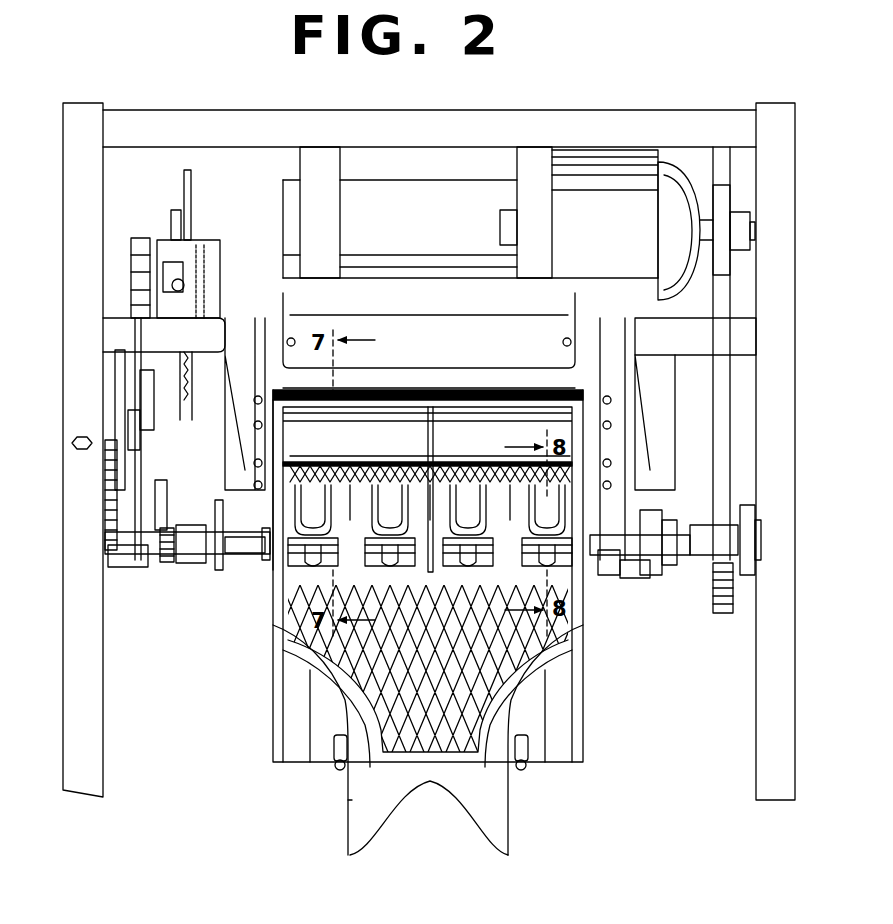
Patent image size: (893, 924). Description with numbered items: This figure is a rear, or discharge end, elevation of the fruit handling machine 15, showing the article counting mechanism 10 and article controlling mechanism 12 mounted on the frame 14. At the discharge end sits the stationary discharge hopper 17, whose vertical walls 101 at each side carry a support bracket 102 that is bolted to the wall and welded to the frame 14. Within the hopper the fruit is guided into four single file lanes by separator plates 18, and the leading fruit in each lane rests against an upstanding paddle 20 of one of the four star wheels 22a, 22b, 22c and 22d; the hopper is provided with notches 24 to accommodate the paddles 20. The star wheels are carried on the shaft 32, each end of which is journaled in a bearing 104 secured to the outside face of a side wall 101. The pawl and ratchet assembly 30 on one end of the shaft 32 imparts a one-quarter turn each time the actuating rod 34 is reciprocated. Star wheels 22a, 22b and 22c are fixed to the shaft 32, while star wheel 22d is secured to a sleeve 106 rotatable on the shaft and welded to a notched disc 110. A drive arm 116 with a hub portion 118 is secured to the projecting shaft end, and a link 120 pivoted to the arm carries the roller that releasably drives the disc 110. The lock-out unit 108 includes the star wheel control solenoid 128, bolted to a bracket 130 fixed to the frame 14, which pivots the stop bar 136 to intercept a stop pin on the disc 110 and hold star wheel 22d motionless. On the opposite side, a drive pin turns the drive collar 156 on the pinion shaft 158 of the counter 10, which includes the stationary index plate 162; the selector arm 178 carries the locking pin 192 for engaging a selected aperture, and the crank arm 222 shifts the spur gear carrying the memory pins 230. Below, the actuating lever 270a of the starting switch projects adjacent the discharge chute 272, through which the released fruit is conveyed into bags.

The article counting mechanism 10 is at (115, 570).
The article controlling mechanism 12 is at (587, 660).
The frame 14 is at (683, 108).
The fruit handling machine 15 is at (555, 85).
The stationary discharge hopper 17 is at (420, 512).
The separator plates 18 is at (352, 500).
The paddle 20 is at (330, 510).
The star wheel 22a is at (312, 566).
The star wheel 22b is at (392, 566).
The star wheel 22c is at (468, 566).
The star wheel 22d is at (535, 566).
The notches 24 is at (325, 555).
The pawl and ratchet assembly 30 is at (218, 560).
The shaft 32 is at (255, 550).
The actuating rod 34 is at (193, 197).
The vertical wall 101 is at (272, 570).
The support bracket 102 is at (245, 334).
The bearing 104 is at (265, 560).
The sleeve 106 is at (628, 578).
The lock-out unit 108 is at (668, 590).
The notched disc 110 is at (655, 568).
The drive arm 116 is at (662, 515).
The hub portion 118 is at (680, 546).
The link 120 is at (650, 505).
The star wheel control solenoid 128 is at (740, 510).
The bracket 130 is at (760, 532).
The stop bar 136 is at (608, 575).
The drive collar 156 is at (172, 565).
The pinion shaft 158 is at (165, 565).
The index plate 162 is at (138, 465).
The selector arm 178 is at (115, 425).
The locking pin 192 is at (130, 425).
The crank arm 222 is at (162, 505).
The memory pins 230 is at (105, 520).
The actuating lever 270a is at (335, 766).
The discharge chute 272 is at (505, 802).